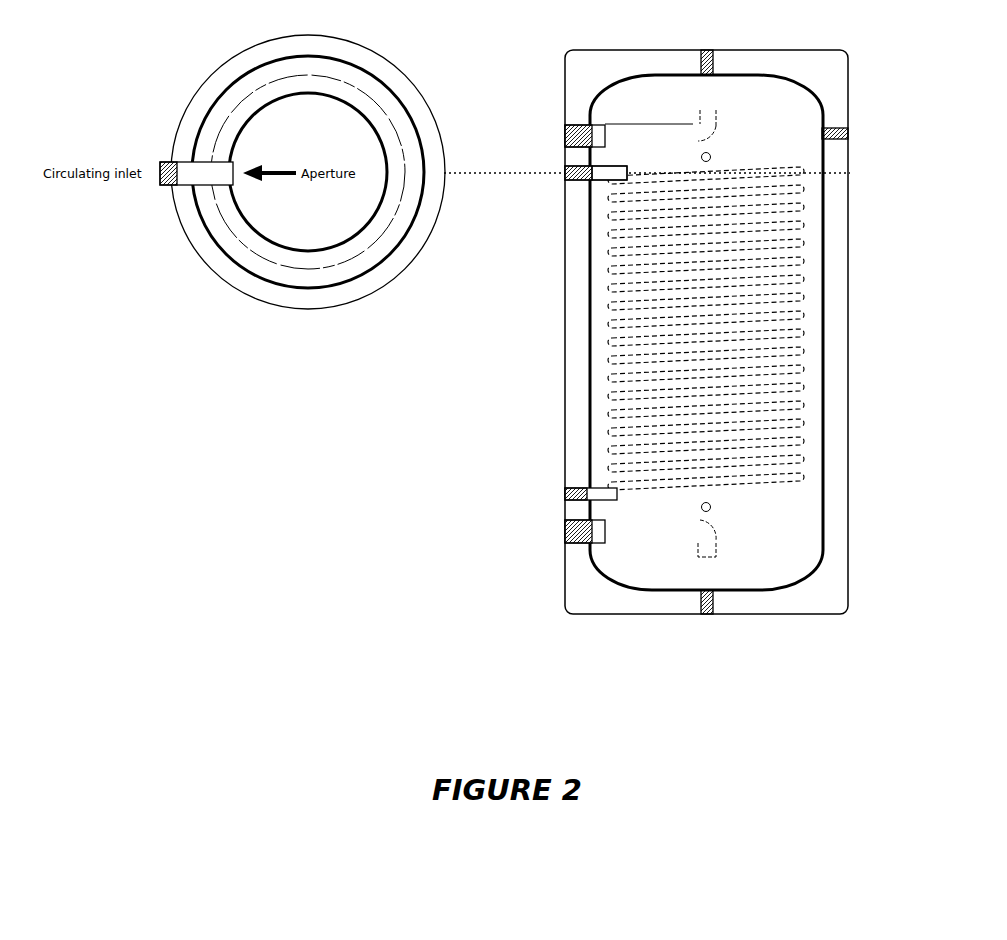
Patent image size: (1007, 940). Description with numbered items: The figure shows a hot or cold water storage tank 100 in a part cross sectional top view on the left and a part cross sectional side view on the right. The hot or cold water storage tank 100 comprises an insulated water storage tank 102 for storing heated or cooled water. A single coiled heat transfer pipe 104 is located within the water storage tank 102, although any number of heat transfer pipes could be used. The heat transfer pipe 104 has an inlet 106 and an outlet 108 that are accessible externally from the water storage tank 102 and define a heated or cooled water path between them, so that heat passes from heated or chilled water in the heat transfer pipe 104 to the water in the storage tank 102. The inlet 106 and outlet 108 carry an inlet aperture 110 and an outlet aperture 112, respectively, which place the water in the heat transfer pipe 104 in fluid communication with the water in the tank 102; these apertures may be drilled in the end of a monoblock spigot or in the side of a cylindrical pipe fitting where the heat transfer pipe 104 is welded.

The hot or cold water storage tank 100 is at (667, 333).
The insulated water storage tank 102 is at (303, 290).
The heat transfer pipe 104 is at (367, 103).
The inlet 106 is at (565, 490).
The outlet 108 is at (565, 175).
The inlet aperture 110 is at (615, 490).
The outlet aperture 112 is at (613, 172).